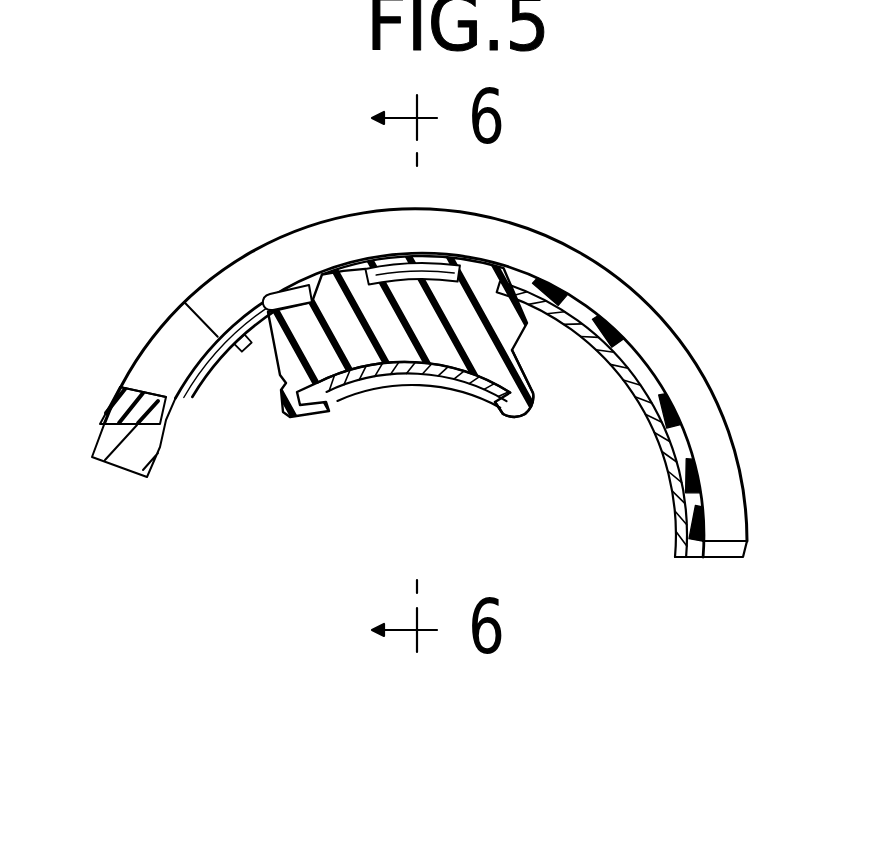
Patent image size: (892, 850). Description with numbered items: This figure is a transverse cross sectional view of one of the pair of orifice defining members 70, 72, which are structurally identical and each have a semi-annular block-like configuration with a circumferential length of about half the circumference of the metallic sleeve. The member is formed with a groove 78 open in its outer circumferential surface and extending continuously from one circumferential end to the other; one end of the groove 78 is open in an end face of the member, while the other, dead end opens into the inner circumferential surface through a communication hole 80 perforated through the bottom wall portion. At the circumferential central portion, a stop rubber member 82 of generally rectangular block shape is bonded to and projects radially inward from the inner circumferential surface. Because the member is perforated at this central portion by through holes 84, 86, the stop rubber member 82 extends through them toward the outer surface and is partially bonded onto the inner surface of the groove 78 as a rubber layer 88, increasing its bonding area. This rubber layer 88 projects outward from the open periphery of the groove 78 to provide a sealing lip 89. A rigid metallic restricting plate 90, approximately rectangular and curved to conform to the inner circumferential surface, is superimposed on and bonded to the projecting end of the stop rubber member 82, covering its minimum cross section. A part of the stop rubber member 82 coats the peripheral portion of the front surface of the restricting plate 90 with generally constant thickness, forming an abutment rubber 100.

The orifice defining member 70 is at (628, 183).
The orifice defining member 72 is at (461, 405).
The groove 78 is at (608, 331).
The communication hole 80 is at (220, 340).
The stop rubber member 82 is at (497, 350).
The through hole 84 is at (332, 278).
The through hole 86 is at (463, 262).
The rubber layer 88 is at (275, 290).
The sealing lip 89 is at (668, 333).
The restricting plate 90 is at (410, 370).
The abutment rubber 100 is at (515, 414).